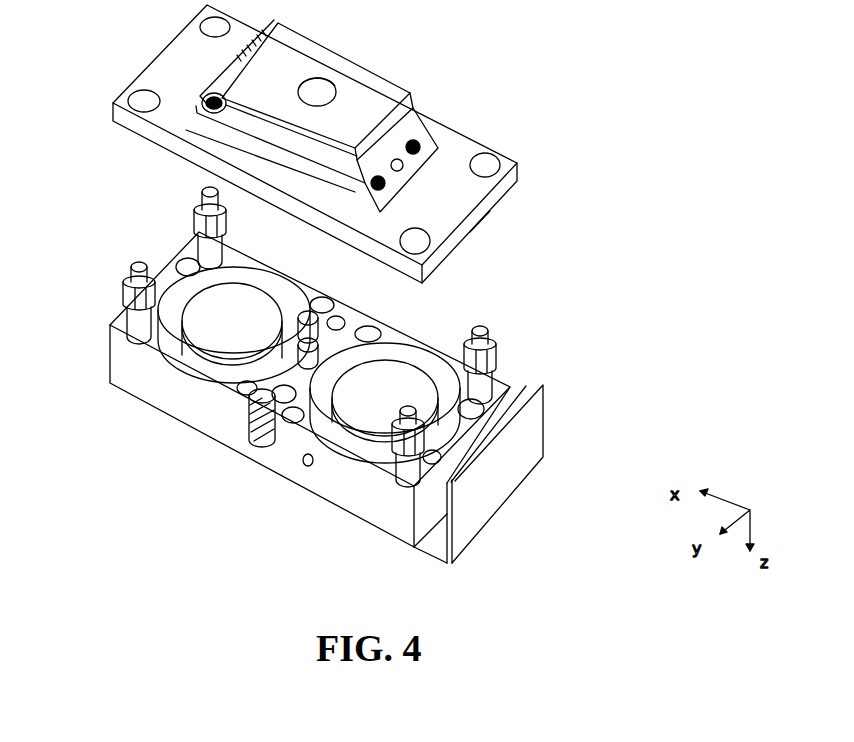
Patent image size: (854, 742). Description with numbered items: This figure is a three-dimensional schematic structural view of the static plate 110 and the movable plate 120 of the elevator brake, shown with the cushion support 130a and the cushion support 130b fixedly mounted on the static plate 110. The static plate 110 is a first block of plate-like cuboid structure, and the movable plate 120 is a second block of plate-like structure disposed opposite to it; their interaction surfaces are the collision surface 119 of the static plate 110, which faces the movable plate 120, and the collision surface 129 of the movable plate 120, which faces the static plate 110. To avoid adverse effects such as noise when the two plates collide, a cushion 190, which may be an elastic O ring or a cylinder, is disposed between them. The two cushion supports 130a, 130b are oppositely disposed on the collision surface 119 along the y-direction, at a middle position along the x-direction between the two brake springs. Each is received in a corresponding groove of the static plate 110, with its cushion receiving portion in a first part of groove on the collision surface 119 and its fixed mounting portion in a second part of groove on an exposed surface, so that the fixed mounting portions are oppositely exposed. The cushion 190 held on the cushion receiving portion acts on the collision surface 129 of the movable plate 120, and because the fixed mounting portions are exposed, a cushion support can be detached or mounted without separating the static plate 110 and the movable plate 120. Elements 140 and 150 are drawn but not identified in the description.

The static plate 110 is at (166, 406).
The collision surface 119 is at (436, 352).
The movable plate 120 is at (460, 147).
The collision surface 129 is at (482, 227).
The cushion support 130a is at (250, 407).
The cushion support 130b is at (348, 312).
The spacer plate 140 is at (236, 126).
The sensor block 150 is at (364, 70).
The cushion 190 is at (338, 393).